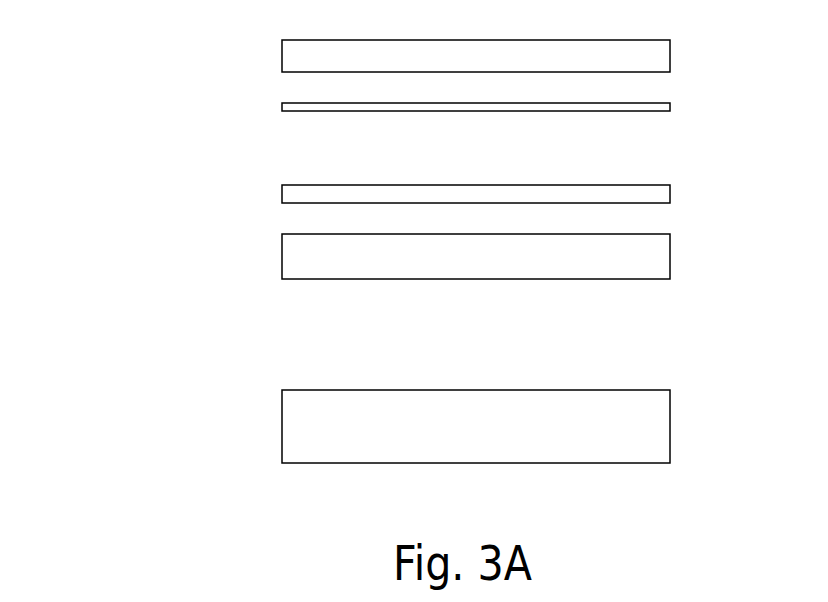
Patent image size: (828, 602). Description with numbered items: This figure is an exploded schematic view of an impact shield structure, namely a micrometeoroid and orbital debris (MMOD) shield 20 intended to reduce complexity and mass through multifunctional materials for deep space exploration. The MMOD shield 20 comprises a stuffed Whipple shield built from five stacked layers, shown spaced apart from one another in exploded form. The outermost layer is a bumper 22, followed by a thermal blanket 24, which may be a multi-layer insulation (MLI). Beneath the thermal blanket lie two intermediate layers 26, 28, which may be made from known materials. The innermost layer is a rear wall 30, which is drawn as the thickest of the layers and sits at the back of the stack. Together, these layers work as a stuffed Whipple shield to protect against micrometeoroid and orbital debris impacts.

The MMOD shield 20 is at (137, 212).
The bumper layer 22 is at (282, 57).
The thermal blanket layer 24 is at (282, 107).
The intermediate layer 26 is at (282, 193).
The intermediate layer 28 is at (282, 255).
The rear wall 30 is at (282, 427).